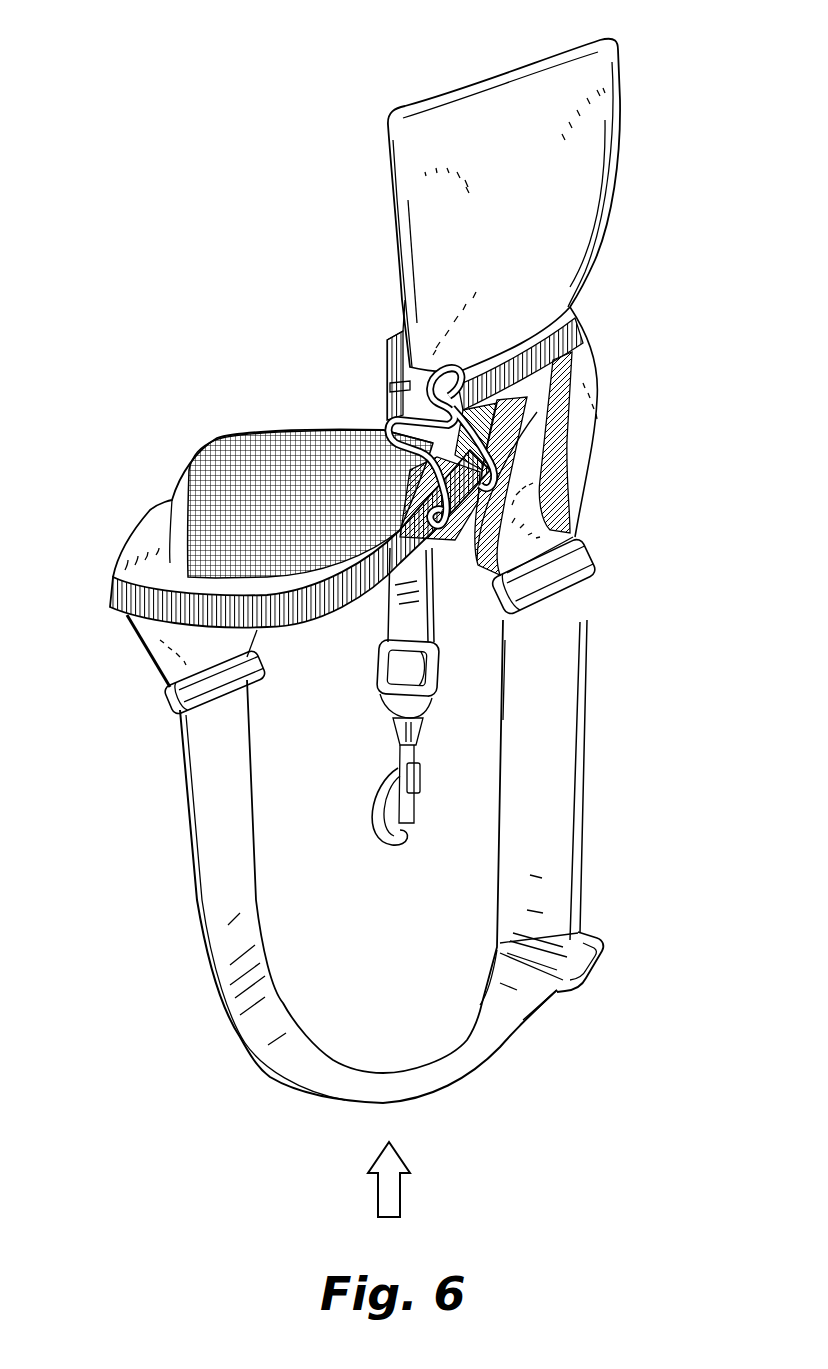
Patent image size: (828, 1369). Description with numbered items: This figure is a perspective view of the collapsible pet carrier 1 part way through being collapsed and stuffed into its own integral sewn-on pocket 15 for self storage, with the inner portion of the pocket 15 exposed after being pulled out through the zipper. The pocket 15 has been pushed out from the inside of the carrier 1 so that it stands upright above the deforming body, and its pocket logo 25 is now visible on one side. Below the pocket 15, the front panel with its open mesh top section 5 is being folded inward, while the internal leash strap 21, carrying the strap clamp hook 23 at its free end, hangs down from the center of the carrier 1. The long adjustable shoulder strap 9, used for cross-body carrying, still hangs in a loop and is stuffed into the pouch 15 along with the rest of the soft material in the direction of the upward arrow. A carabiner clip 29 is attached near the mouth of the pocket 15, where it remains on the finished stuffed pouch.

The pet carrier 1 is at (128, 396).
The open mesh top section 5 is at (263, 437).
The adjustable strap 9 is at (573, 673).
The integral sewn-on pocket 15 is at (382, 212).
The internal leash strap 21 is at (421, 580).
The strap clamp hook 23 is at (420, 777).
The pocket logo 25 is at (603, 62).
The carabiner clip 29 is at (383, 423).